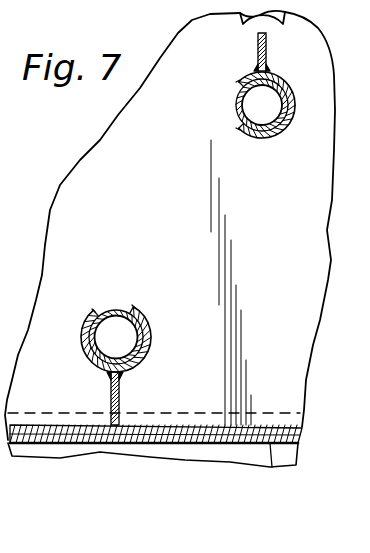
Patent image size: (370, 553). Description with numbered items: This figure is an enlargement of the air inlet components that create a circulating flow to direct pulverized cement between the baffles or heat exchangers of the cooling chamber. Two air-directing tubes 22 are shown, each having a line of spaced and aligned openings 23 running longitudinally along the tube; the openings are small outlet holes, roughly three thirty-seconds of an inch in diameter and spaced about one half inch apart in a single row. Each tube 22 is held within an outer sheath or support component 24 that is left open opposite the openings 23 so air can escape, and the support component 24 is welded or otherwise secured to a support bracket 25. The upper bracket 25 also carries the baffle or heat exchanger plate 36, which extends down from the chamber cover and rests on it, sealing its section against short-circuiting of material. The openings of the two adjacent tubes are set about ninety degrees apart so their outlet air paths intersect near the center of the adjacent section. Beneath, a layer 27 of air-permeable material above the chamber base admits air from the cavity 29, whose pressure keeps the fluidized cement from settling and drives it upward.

The tubes 22 is at (243, 126).
The openings 23 is at (236, 108).
The support component 24 is at (285, 137).
The support bracket 25 is at (268, 50).
The layer of air-permeable material 27 is at (275, 463).
The cavity 29 is at (67, 449).
The baffle 36 is at (242, 18).